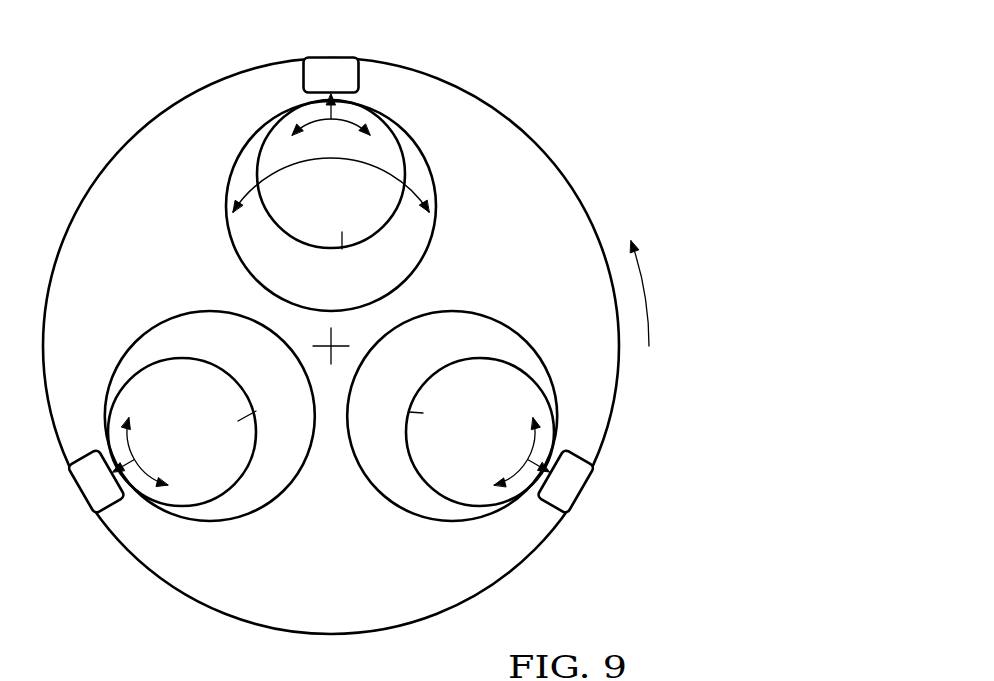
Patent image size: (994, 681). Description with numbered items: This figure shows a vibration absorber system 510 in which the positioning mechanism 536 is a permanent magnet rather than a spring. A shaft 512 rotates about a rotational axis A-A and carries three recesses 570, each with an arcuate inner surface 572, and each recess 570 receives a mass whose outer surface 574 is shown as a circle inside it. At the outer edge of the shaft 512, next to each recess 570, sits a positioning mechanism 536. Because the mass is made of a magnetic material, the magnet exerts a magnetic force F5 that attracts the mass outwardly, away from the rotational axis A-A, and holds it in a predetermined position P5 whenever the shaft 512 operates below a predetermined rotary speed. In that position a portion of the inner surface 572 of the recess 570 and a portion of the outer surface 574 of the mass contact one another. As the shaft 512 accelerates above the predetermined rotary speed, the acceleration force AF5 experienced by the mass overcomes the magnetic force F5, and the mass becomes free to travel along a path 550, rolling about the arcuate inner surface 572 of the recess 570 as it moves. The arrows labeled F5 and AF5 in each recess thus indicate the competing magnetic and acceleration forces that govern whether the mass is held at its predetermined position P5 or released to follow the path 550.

The vibration absorber system 510 is at (570, 98).
The shaft 512 is at (580, 196).
The positioning mechanism 536 is at (345, 72).
The path 550 is at (331, 293).
The recess 570 is at (331, 336).
The inner surface 572 is at (257, 271).
The outer surface 574 is at (400, 205).
The magnetic force F5 is at (334, 111).
The acceleration force AF5 is at (331, 303).
The predetermined position P5 is at (342, 250).
The rotational axis A-A is at (333, 345).